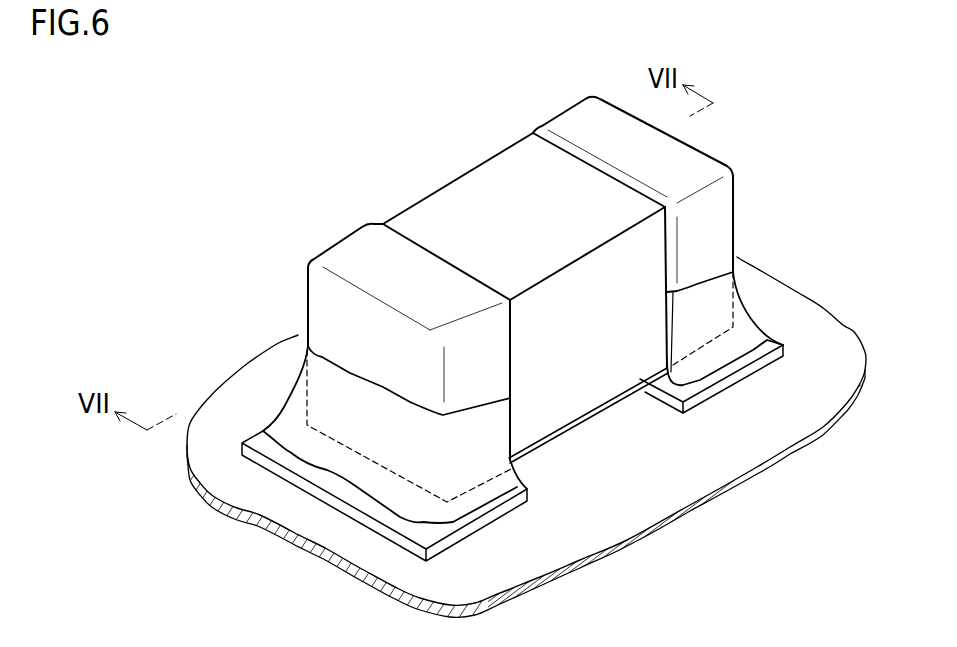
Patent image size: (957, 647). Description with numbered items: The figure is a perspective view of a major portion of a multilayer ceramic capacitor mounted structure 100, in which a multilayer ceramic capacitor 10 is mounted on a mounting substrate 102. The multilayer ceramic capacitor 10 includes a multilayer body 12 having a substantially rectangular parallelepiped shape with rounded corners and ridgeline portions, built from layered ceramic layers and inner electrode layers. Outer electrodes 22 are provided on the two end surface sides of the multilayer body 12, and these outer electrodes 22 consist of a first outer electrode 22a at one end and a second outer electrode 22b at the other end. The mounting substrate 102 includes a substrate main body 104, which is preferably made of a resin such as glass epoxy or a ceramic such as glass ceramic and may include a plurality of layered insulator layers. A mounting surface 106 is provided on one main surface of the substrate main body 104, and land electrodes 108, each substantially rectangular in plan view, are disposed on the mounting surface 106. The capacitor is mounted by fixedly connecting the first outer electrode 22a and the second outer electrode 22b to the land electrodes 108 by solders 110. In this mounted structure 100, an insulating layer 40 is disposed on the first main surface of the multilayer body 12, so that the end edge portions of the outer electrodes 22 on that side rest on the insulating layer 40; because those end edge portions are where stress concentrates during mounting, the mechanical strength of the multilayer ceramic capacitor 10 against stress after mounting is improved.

The multilayer ceramic capacitor mounted structure 100 is at (282, 157).
The multilayer ceramic capacitor 10 is at (383, 172).
The multilayer body 12 is at (457, 177).
The outer electrodes 22 is at (129, 134).
The first outer electrode 22a is at (343, 242).
The second outer electrode 22b is at (570, 110).
The insulating layer 40 is at (563, 428).
The mounting substrate 102 is at (243, 517).
The substrate main body 104 is at (583, 538).
The mounting surface 106 is at (680, 465).
The land electrodes 108 is at (383, 517).
The solders 110 is at (297, 407).